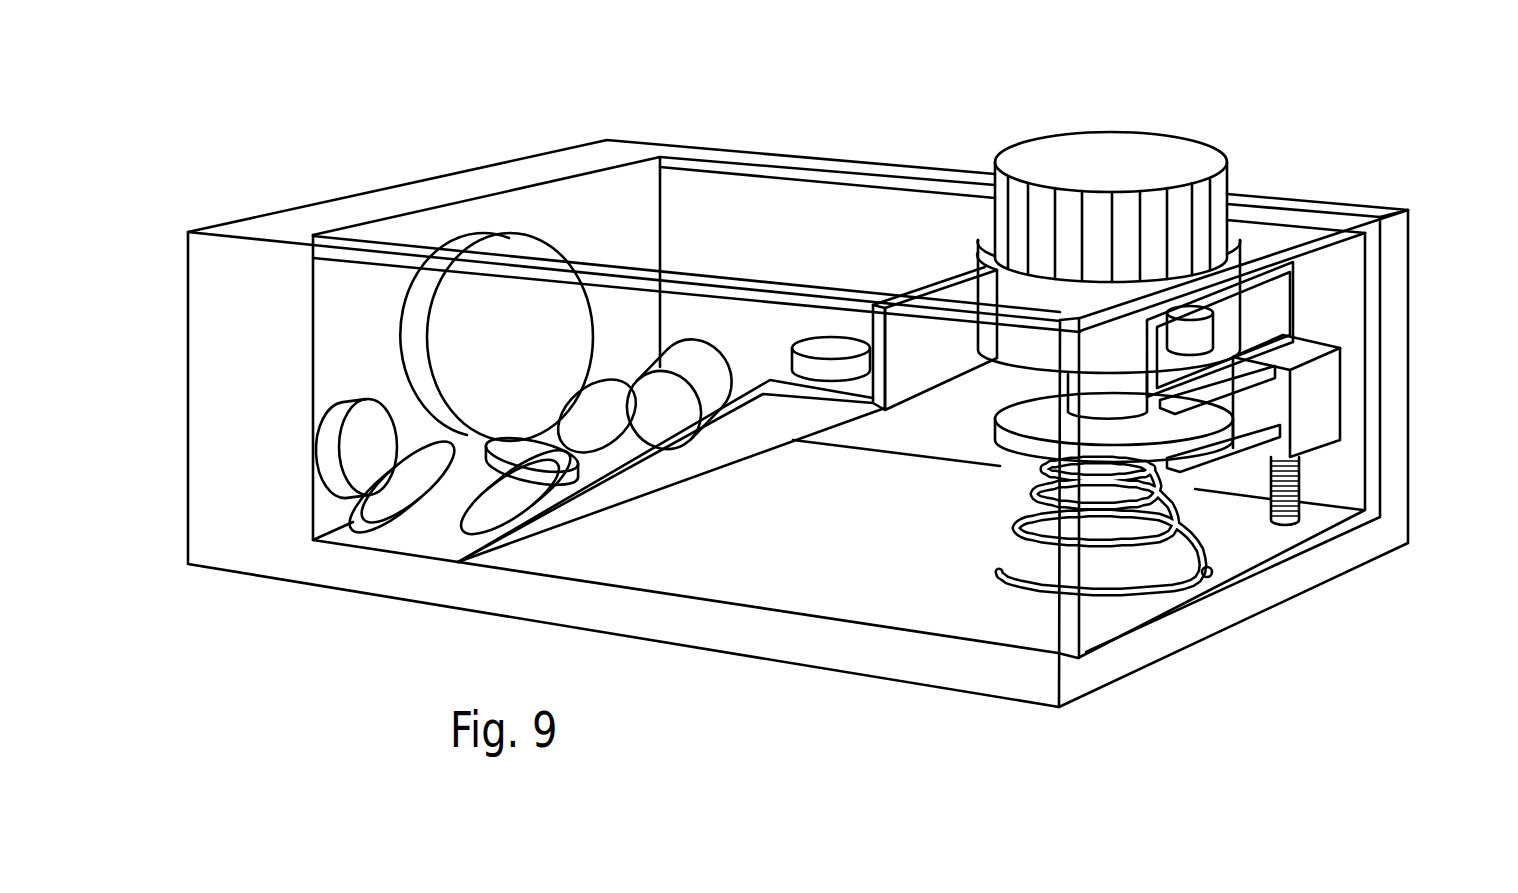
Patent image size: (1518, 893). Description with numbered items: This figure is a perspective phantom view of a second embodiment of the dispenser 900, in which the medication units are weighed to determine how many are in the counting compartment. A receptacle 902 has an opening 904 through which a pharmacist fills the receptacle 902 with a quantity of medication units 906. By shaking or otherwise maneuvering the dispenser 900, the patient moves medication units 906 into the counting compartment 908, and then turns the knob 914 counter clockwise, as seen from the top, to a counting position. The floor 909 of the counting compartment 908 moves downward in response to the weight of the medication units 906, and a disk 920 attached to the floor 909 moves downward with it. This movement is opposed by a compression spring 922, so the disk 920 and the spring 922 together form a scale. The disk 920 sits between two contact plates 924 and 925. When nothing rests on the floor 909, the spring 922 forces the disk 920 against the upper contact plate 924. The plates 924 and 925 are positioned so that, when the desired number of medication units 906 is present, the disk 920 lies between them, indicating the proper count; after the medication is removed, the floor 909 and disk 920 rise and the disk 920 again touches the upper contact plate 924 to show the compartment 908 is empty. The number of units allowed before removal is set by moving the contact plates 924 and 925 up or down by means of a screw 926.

The dispenser 900 is at (313, 132).
The receptacle 902 is at (788, 202).
The opening 904 is at (515, 300).
The medication units 906 is at (328, 451).
The counting compartment 908 is at (1308, 275).
The floor 909 is at (1215, 307).
The knob 914 is at (1195, 135).
The disk 920 is at (1000, 416).
The compression spring 922 is at (1014, 512).
The contact plate 924 is at (1335, 400).
The contact plate 925 is at (1285, 437).
The screw 926 is at (1305, 480).